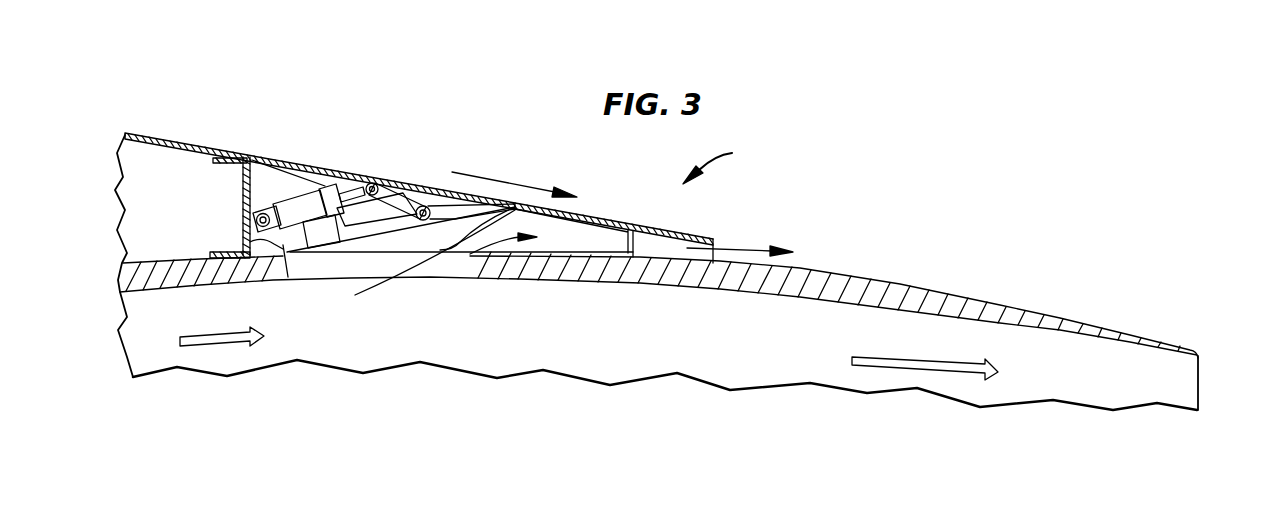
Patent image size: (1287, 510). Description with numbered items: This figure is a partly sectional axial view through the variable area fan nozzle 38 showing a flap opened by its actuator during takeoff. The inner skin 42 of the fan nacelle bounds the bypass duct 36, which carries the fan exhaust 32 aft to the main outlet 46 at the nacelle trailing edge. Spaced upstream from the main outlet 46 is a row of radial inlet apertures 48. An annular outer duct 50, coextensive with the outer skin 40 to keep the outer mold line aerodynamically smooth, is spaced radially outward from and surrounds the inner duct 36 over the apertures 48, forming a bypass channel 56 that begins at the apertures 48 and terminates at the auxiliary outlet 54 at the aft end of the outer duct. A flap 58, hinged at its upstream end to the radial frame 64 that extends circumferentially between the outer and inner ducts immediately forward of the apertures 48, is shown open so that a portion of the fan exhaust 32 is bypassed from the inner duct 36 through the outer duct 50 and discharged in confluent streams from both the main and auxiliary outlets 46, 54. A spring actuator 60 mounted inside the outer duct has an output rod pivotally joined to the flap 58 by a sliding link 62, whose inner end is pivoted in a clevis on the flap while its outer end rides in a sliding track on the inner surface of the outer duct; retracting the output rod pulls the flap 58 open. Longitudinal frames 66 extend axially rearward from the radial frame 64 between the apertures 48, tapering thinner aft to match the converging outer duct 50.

The fan exhaust flow 32 is at (516, 180).
The bypass duct 36 is at (498, 351).
The fan nozzle 38 is at (720, 163).
The outer skin 40 is at (167, 140).
The inner skin 42 is at (188, 288).
The main outlet 46 is at (1203, 373).
The inlet apertures 48 is at (473, 258).
The outer duct 50 is at (620, 220).
The auxiliary outlet 54 is at (717, 248).
The bypass channel 56 is at (562, 249).
The flaps 58 is at (320, 258).
The spring actuators 60 is at (293, 198).
The sliding link 62 is at (425, 183).
The radial frame 64 is at (243, 203).
The longitudinal frames 66 is at (636, 245).